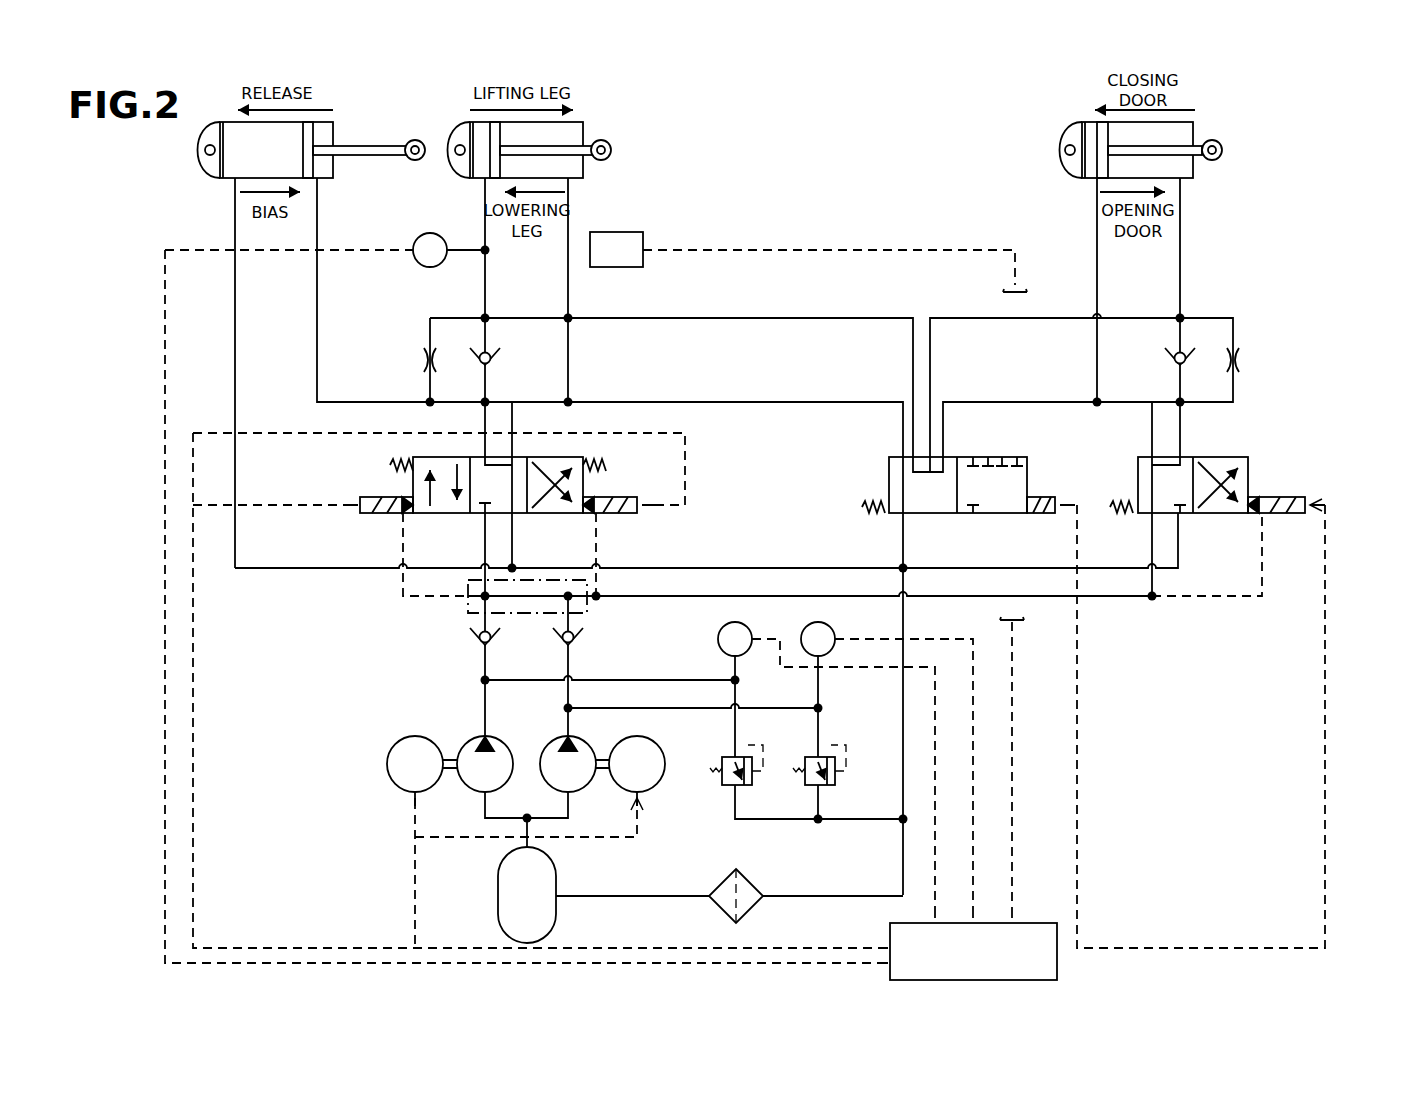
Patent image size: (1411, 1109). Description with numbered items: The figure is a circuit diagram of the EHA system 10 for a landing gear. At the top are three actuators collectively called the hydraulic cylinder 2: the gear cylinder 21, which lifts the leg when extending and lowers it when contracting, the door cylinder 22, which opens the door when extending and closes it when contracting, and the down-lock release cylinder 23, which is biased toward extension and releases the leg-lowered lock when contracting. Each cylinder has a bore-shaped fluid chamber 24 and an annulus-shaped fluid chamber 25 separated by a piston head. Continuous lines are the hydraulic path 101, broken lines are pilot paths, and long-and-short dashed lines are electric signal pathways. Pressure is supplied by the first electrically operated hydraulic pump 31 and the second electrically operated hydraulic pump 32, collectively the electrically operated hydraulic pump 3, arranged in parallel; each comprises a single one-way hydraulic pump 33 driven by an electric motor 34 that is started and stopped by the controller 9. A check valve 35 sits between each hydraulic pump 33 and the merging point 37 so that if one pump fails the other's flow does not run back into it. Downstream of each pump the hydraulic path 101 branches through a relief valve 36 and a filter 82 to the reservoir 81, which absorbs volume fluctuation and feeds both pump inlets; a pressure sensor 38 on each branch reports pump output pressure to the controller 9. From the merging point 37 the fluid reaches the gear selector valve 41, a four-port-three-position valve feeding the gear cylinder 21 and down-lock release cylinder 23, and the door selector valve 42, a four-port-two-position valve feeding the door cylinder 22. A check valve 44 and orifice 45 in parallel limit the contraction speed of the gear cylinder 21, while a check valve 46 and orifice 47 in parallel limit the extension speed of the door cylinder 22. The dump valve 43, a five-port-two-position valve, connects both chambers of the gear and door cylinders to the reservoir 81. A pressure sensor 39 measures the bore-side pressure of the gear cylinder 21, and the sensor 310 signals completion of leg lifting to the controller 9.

The hydraulic cylinder 2 is at (737, 124).
The electrically operated hydraulic pump 3 is at (378, 772).
The controller 9 is at (890, 942).
The EHA system 10 is at (1333, 118).
The hydraulic path 101 is at (1207, 264).
The gear cylinder 21 is at (585, 132).
The door cylinder 22 is at (1195, 132).
The down-lock release cylinder 23 is at (335, 132).
The bore-shaped fluid chamber 24 is at (232, 172).
The annulus-shaped fluid chamber 25 is at (330, 168).
The first electrically operated hydraulic pump 31 is at (365, 712).
The second electrically operated hydraulic pump 32 is at (656, 802).
The hydraulic pump 33 is at (475, 736).
The electric motor 34 is at (418, 736).
The check valve 35 is at (468, 634).
The relief valve 36 is at (745, 788).
The merging point 37 is at (468, 618).
The pressure sensor 38 is at (718, 632).
The pressure sensor 39 is at (413, 242).
The gear selector valve 41 is at (614, 524).
The door selector valve 42 is at (1265, 480).
The dump valve 43 is at (862, 472).
The check valve 44 is at (497, 357).
The orifice 45 is at (427, 352).
The check valve 46 is at (1167, 358).
The orifice 47 is at (1240, 352).
The reservoir 81 is at (498, 903).
The filter 82 is at (745, 916).
The sensor 310 is at (610, 268).